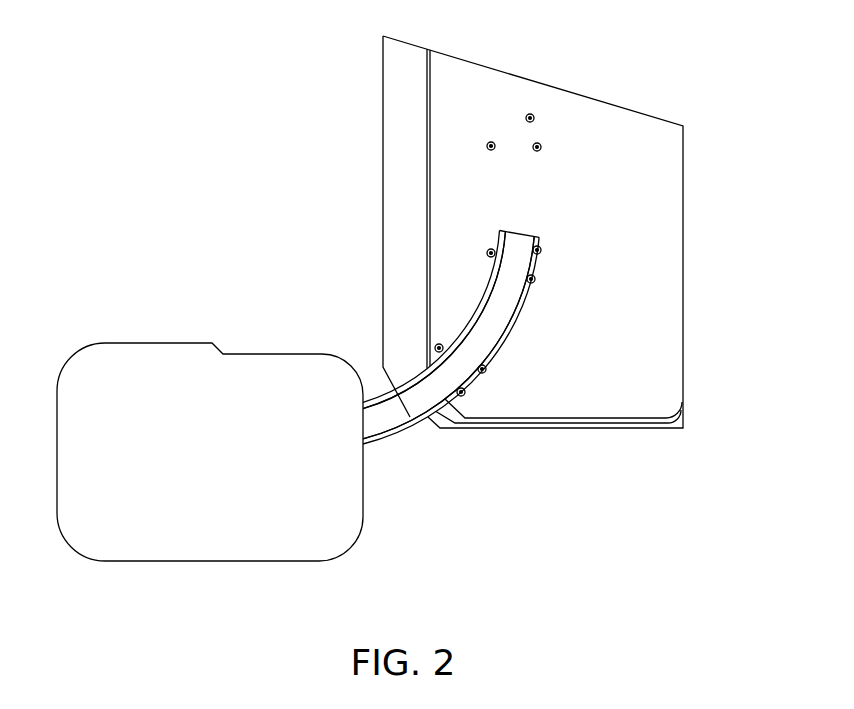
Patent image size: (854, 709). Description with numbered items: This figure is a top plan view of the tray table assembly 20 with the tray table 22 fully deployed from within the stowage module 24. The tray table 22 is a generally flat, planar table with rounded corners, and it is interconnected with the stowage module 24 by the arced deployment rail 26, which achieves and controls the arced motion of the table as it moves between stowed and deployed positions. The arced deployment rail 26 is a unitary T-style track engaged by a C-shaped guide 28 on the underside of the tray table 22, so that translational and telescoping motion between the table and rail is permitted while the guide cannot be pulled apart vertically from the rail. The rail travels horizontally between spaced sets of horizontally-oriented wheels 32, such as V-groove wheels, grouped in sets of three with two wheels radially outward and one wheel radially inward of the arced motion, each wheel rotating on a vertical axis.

The tray table assembly 20 is at (665, 48).
The tray table 22 is at (207, 550).
The stowage module 24 is at (487, 92).
The arced deployment rail 26 is at (427, 392).
The C-shaped guide 28 is at (382, 422).
The wheels 32 is at (538, 142).